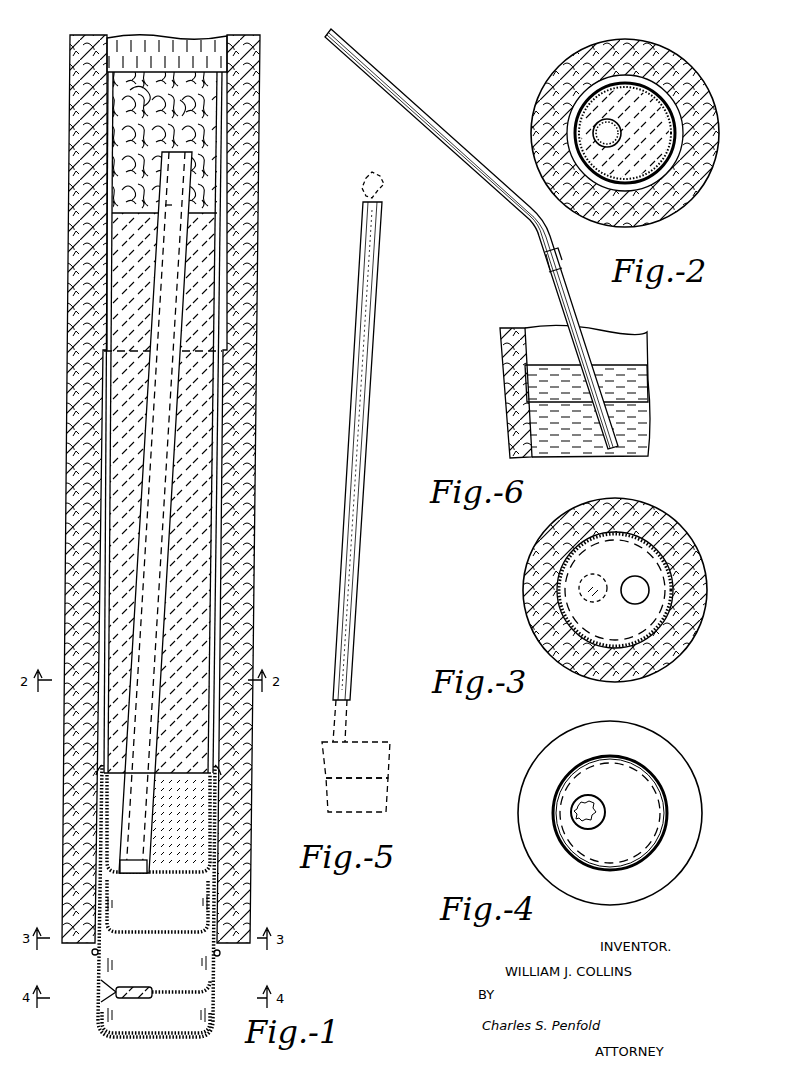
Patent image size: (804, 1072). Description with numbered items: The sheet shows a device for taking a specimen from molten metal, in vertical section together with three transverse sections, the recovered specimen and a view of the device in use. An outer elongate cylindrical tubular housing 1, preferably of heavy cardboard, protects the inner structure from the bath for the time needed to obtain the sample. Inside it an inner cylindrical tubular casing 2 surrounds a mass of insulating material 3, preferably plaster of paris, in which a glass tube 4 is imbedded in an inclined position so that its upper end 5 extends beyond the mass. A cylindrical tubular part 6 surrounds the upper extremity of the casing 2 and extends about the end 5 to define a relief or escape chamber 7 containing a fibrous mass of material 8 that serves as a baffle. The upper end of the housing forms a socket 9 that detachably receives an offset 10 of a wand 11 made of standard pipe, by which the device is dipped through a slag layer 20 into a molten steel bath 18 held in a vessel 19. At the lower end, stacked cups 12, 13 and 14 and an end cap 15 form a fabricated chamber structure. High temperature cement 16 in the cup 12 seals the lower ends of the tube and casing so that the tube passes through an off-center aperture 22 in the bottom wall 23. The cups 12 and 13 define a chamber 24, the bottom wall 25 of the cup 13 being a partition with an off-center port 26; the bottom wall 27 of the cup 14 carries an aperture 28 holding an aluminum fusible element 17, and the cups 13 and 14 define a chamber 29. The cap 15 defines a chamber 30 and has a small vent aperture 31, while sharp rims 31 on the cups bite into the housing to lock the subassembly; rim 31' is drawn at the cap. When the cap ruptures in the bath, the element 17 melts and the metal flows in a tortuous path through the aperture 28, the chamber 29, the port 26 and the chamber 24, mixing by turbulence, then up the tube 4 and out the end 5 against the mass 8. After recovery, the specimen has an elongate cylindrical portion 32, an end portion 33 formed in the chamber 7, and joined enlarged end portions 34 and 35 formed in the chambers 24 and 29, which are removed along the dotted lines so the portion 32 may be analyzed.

In FIG. 1, the outer housing 1 is at (247, 230).
In FIG. 2, the outer housing 1 is at (676, 62).
In FIG. 3, the outer housing 1 is at (678, 526).
In FIG. 4, the outer housing 1 is at (678, 758).
In FIG. 1, the inner casing 2 is at (213, 384).
In FIG. 2, the inner casing 2 is at (668, 98).
In FIG. 1, the mass of insulating material 3 is at (195, 405).
In FIG. 1, the glass tube 4 is at (160, 445).
In FIG. 2, the glass tube 4 is at (598, 132).
In FIG. 3, the glass tube 4 is at (590, 602).
In FIG. 1, the upper end of the tube 5 is at (155, 512).
In FIG. 1, the tubular part 6 is at (237, 158).
In FIG. 1, the relief chamber 7 is at (195, 100).
In FIG. 1, the fibrous mass 8 is at (215, 128).
In FIG. 1, the socket 9 is at (163, 46).
In FIG. 6, the offset of the wand 10 is at (548, 258).
In FIG. 6, the wand 11 is at (410, 104).
In FIG. 1, the uppermost cup 12 is at (110, 800).
In FIG. 1, the intermediate cup 13 is at (100, 870).
In FIG. 1, the lower cup 14 is at (82, 925).
In FIG. 3, the lower cup 14 is at (682, 540).
In FIG. 1, the end cap 15 is at (98, 1018).
In FIG. 4, the end cap 15 is at (665, 795).
In FIG. 1, the high temperature cement 16 is at (190, 786).
In FIG. 1, the fusible element 17 is at (128, 997).
In FIG. 4, the fusible element 17 is at (596, 817).
In FIG. 6, the molten steel bath 18 is at (646, 424).
In FIG. 6, the vessel 19 is at (506, 410).
In FIG. 6, the slag layer 20 is at (646, 382).
In FIG. 1, the aperture in bottom wall of uppermost cup 22 is at (150, 875).
In FIG. 3, the aperture in bottom wall of uppermost cup 22 is at (600, 582).
In FIG. 1, the bottom wall of uppermost cup 23 is at (175, 870).
In FIG. 1, the chamber 24 is at (140, 913).
In FIG. 1, the bottom wall of intermediate cup 25 is at (135, 932).
In FIG. 3, the bottom wall of intermediate cup 25 is at (632, 540).
In FIG. 1, the aperture in partition 26 is at (172, 932).
In FIG. 3, the aperture in partition 26 is at (645, 604).
In FIG. 1, the bottom wall of lower cup 27 is at (185, 990).
In FIG. 4, the bottom wall of lower cup 27 is at (615, 768).
In FIG. 1, the aperture in lower cup wall 28 is at (108, 993).
In FIG. 4, the aperture in lower cup wall 28 is at (598, 802).
In FIG. 1, the chamber 29 is at (140, 972).
In FIG. 1, the chamber 30 is at (106, 1030).
In FIG. 1, the vent aperture 31 is at (126, 831).
In FIG. 1, the bottom gasket 31' is at (180, 1047).
In FIG. 5, the elongate cylindrical portion of specimen 32 is at (366, 356).
In FIG. 5, the end portion of specimen 33 is at (380, 188).
In FIG. 5, the enlarged end portion of specimen 34 is at (376, 757).
In FIG. 5, the enlarged end portion of specimen 35 is at (376, 793).